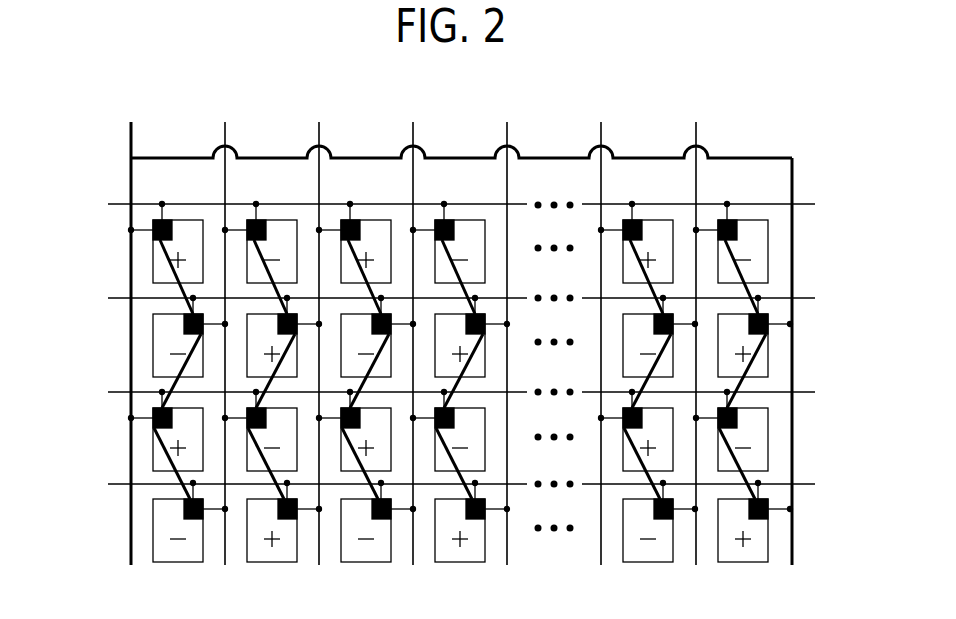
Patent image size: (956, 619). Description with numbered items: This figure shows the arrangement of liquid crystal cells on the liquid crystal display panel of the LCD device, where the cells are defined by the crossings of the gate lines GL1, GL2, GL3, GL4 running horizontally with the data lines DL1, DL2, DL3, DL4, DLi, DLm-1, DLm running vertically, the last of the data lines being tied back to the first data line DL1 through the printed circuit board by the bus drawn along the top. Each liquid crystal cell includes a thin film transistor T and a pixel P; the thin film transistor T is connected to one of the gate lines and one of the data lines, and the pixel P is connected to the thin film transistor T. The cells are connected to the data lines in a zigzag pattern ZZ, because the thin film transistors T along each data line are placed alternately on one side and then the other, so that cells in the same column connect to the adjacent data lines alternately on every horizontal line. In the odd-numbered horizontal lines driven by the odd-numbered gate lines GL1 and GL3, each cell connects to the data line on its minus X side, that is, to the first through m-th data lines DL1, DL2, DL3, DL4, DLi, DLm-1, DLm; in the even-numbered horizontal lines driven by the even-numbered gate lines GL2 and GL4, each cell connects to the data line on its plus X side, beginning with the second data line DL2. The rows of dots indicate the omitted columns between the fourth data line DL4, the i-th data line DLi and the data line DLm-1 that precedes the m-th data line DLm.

The thin film transistor T is at (737, 232).
The pixel P is at (767, 272).
The zigzag pattern ZZ is at (752, 372).
The first data line DL1 is at (131, 329).
The second data line DL2 is at (225, 329).
The third data line DL3 is at (319, 329).
The fourth data line DL4 is at (413, 329).
The i-th data line DLi is at (507, 329).
The (m-1)th data line DLm-1 is at (618, 329).
The m-th data line DLm is at (702, 329).
The first gate line GL1 is at (442, 204).
The second gate line GL2 is at (442, 298).
The third gate line GL3 is at (442, 392).
The fourth gate line GL4 is at (442, 484).